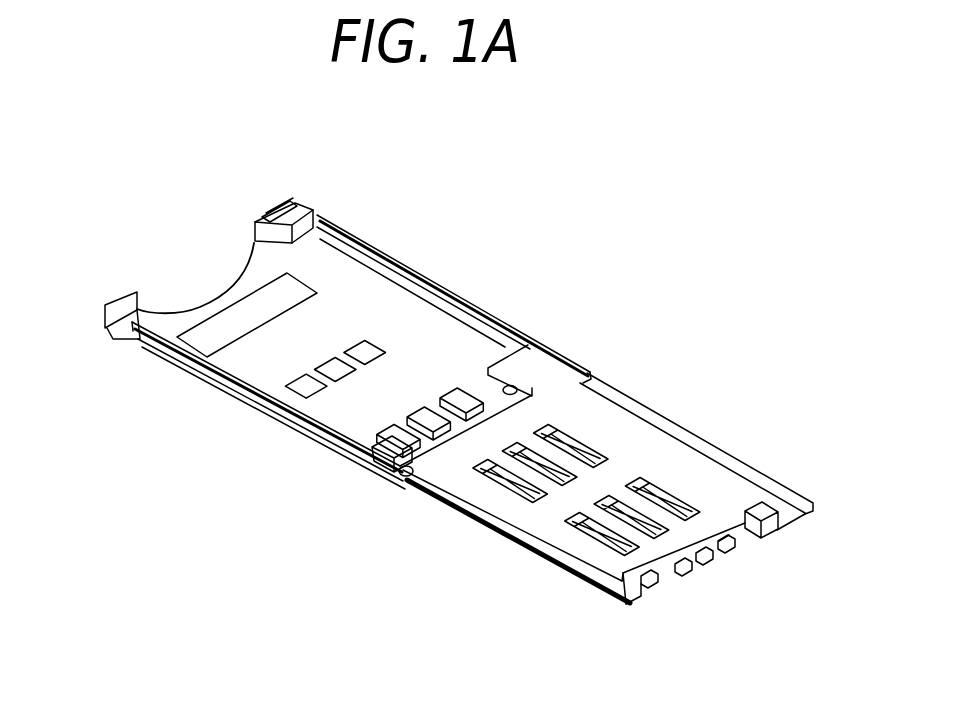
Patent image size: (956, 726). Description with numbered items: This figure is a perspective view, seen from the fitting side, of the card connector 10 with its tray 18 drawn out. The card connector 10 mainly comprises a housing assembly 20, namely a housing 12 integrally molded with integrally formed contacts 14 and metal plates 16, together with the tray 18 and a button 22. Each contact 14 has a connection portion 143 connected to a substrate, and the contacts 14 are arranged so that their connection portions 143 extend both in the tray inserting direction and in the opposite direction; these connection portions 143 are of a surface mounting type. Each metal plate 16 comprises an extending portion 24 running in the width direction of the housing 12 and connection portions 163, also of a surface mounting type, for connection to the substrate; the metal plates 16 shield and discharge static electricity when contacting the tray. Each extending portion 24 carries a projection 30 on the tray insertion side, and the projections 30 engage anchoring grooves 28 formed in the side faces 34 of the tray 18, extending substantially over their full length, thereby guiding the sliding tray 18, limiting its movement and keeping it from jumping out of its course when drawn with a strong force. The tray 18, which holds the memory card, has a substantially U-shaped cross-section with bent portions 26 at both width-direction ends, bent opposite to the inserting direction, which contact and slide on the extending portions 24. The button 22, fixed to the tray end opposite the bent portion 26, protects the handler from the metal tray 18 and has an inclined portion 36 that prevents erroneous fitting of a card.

The card connector 10 is at (425, 415).
The housing 12 is at (722, 482).
The contact 14 is at (727, 545).
The metal plate 16 is at (658, 583).
The tray 18 is at (112, 346).
The housing assembly 20 is at (678, 411).
The button 22 is at (278, 202).
The extending portion 24 is at (632, 397).
The bent portion 26 is at (597, 371).
The anchoring groove 28 is at (410, 270).
The projection 30 is at (378, 466).
The side face 34 is at (335, 212).
The inclined portion 36 is at (250, 236).
The connection portion 143 is at (723, 550).
The connection portion 163 is at (648, 604).